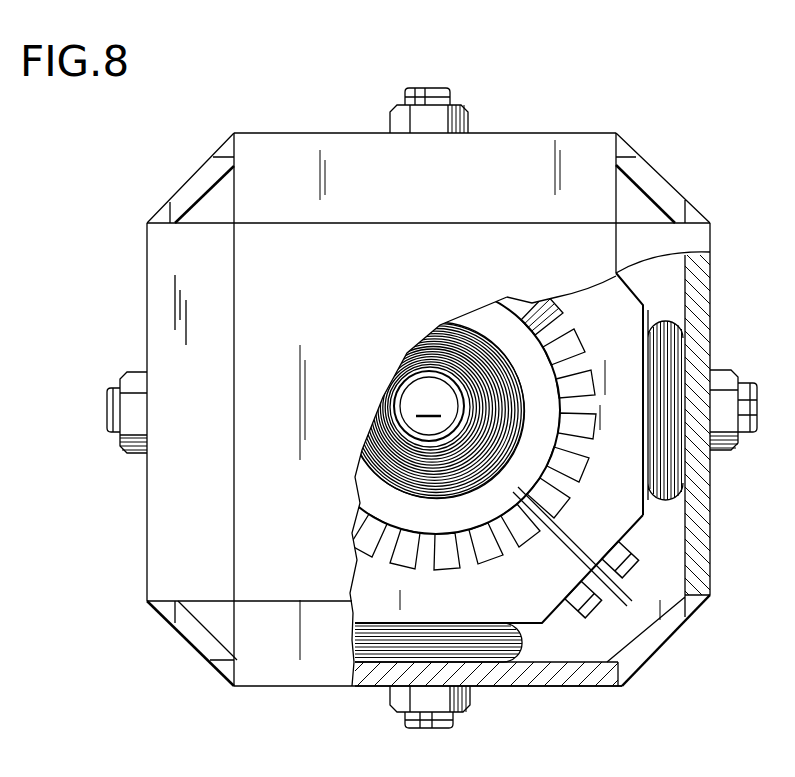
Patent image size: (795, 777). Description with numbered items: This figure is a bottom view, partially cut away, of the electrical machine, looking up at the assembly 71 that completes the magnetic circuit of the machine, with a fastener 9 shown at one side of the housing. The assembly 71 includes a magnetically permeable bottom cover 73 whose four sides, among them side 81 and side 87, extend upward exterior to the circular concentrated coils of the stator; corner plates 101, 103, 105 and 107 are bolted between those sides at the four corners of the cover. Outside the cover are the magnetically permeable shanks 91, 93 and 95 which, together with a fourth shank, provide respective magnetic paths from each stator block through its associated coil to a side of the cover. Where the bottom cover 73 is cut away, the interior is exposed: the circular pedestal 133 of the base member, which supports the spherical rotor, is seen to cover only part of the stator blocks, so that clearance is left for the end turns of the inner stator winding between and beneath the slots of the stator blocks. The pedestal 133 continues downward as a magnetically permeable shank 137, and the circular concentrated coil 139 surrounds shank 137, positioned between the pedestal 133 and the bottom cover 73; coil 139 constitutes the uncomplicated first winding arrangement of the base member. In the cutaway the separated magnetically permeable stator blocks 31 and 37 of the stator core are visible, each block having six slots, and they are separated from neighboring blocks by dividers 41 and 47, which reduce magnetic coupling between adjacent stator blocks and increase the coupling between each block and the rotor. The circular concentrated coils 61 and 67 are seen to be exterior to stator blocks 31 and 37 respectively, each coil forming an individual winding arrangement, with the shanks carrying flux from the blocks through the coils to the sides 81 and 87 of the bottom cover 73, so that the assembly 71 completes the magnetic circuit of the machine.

The mounting bolt 9 is at (757, 385).
The stator block 31 is at (530, 587).
The stator block 37 is at (632, 308).
The divider 41 is at (628, 596).
The divider 47 is at (532, 303).
The circular concentrated coil 61 is at (523, 642).
The circular concentrated coil 67 is at (661, 498).
The assembly for completing the magnetic circuit 71 is at (162, 290).
The bottom cover 73 is at (389, 316).
The side 81 is at (557, 687).
The side 87 is at (703, 531).
The magnetically permeable shank 91 is at (400, 725).
The magnetically permeable shank 93 is at (110, 436).
The magnetically permeable shank 95 is at (445, 96).
The corner plate 101 is at (647, 643).
The corner plate 103 is at (207, 657).
The corner plate 105 is at (188, 195).
The corner plate 107 is at (670, 190).
The pedestal body 133 is at (504, 498).
The magnetically permeable shank 137 is at (429, 406).
The circular concentrated coil 139 is at (518, 378).